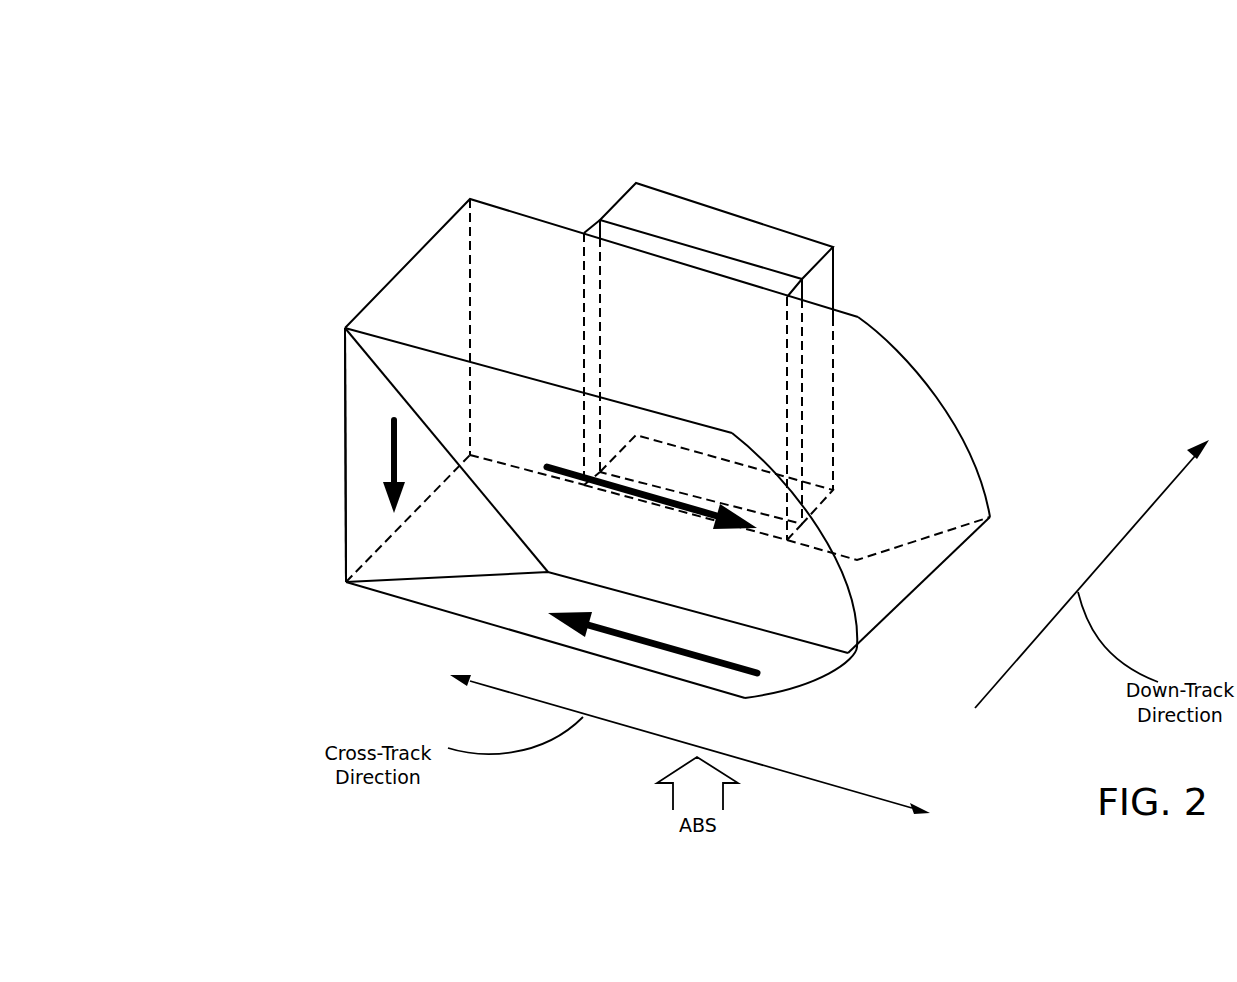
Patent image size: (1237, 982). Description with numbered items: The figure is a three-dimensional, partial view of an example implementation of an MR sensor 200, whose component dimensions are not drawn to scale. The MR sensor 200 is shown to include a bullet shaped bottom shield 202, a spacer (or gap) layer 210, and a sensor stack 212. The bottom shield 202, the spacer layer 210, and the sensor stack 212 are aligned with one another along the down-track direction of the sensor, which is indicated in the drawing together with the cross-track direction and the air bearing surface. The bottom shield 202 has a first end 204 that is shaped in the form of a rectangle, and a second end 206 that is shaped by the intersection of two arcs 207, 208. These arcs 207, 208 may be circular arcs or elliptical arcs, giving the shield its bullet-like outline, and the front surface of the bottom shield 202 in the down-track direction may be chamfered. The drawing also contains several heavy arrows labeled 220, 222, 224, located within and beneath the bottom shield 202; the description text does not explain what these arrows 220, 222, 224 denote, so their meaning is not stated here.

The MR sensor 200 is at (278, 96).
The bottom shield 202 is at (278, 434).
The first end 204 is at (377, 508).
The second end 206 is at (1106, 346).
The arc 207 is at (833, 672).
The arc 208 is at (917, 373).
The spacer layer 210 is at (627, 222).
The sensor stack 212 is at (809, 237).
The magnetic field direction arrow 220 is at (587, 483).
The down arrow 222 is at (388, 447).
The flow direction arrow 224 is at (735, 668).